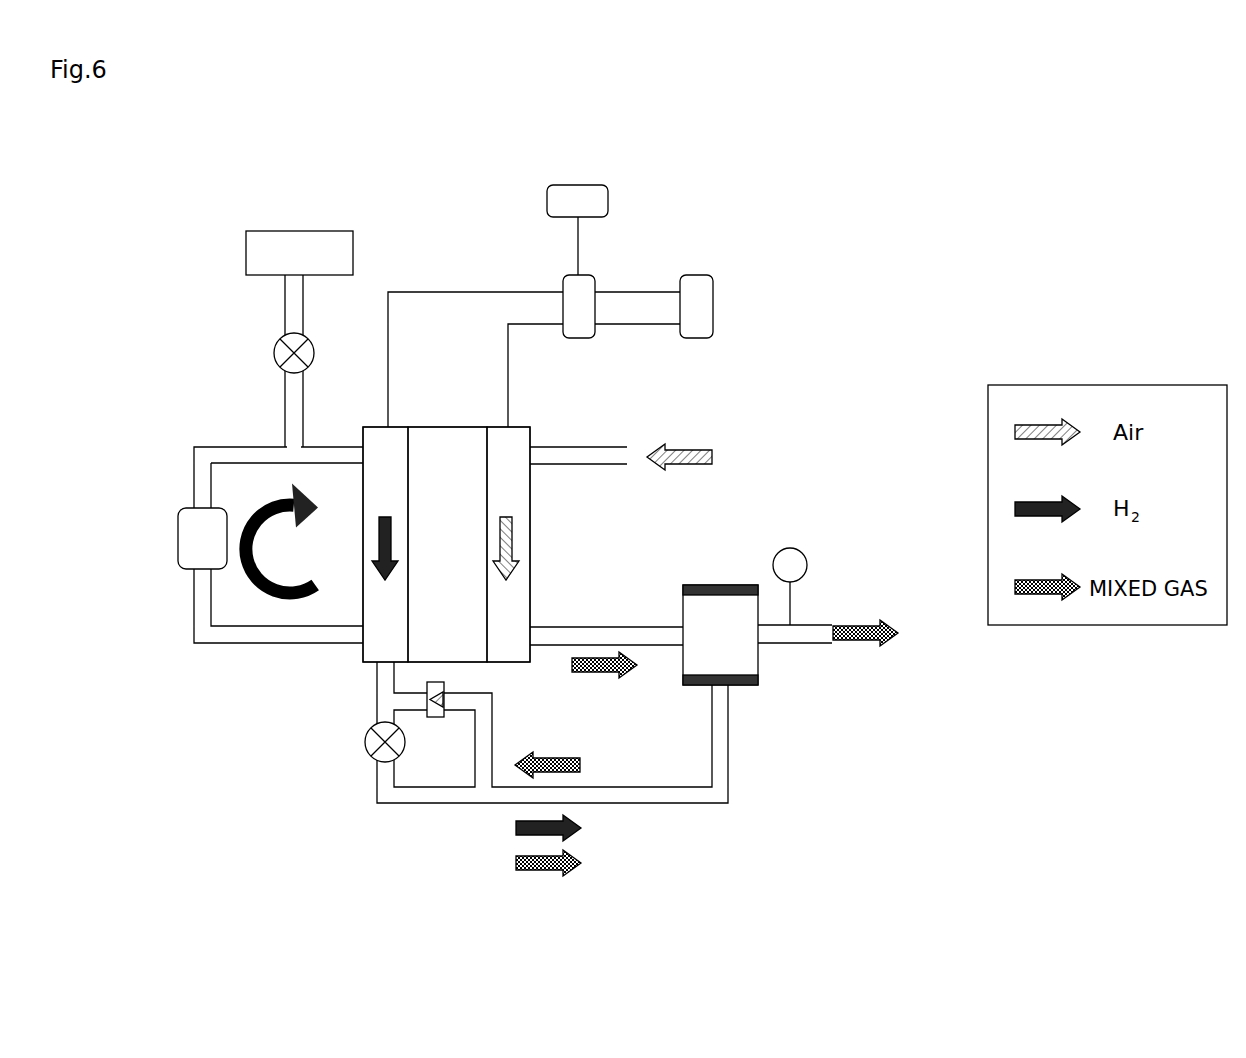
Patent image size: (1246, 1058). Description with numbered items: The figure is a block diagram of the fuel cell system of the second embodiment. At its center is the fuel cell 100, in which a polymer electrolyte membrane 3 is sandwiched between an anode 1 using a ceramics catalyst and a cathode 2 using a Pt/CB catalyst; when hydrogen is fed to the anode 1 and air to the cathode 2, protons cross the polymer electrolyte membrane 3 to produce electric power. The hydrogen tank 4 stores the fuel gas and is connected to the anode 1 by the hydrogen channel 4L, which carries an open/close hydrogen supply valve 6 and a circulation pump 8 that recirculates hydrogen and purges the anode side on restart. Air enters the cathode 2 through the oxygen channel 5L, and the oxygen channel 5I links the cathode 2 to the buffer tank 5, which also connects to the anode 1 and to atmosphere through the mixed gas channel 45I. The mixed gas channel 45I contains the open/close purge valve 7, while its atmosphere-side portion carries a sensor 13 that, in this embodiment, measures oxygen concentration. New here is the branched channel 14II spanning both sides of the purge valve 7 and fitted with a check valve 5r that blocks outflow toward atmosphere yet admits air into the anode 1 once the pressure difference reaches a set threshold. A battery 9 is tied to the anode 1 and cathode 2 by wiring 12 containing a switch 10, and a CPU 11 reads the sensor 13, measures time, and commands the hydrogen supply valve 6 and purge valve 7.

The anode 1 is at (390, 477).
The cathode 2 is at (513, 477).
The polymer electrolyte membrane 3 is at (451, 477).
The hydrogen tank 4 is at (248, 250).
The hydrogen channel 4L is at (200, 447).
The buffer tank 5 is at (726, 649).
The oxygen channel 5L is at (608, 447).
The oxygen channel 5I is at (588, 627).
The check valve 5r is at (445, 682).
The hydrogen supply valve 6 is at (275, 352).
The purge valve 7 is at (363, 742).
The circulation pump 8 is at (178, 540).
The battery 9 is at (713, 305).
The switch 10 is at (592, 276).
The CPU 11 is at (578, 185).
The wiring 12 is at (450, 292).
The sensor 13 is at (803, 553).
The branched channel 14II is at (493, 745).
The mixed gas channel 45I is at (793, 643).
The fuel cell 100 is at (446, 502).